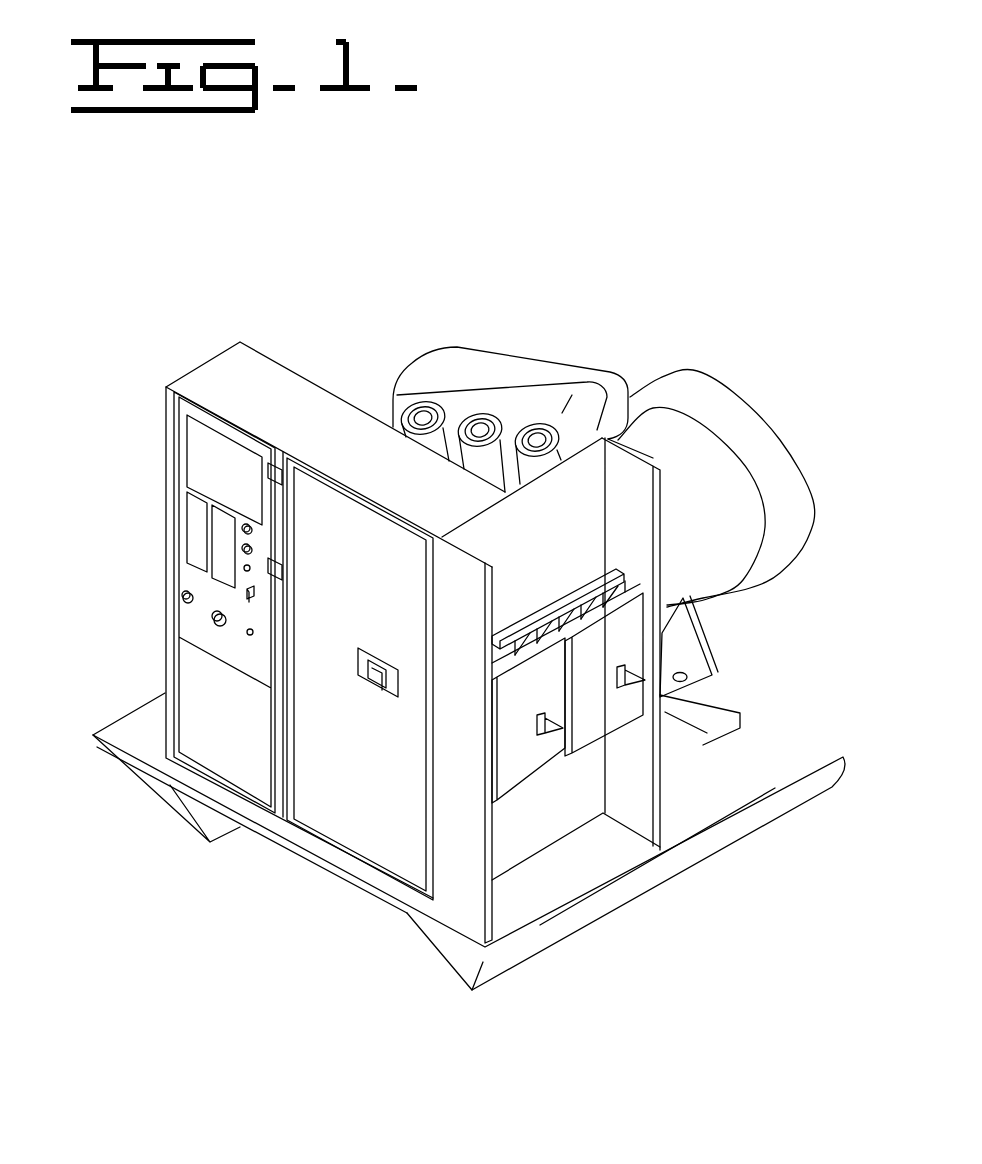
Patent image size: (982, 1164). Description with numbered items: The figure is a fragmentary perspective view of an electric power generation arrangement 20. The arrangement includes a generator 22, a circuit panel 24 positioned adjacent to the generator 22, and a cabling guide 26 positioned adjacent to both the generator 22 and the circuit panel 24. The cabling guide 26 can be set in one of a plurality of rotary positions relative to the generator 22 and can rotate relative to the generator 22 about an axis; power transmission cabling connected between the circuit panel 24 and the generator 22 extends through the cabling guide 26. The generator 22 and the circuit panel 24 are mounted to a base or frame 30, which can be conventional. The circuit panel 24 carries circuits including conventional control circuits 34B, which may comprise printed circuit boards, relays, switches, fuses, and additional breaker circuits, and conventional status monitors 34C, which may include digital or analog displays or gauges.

The electric power generation (EPG) arrangement 20 is at (612, 293).
The generator 22 is at (781, 451).
The circuit panel 24 is at (340, 783).
The cabling guide 26 is at (478, 348).
The base or frame 30 is at (795, 750).
The control circuits 34B is at (212, 527).
The status monitors 34C is at (223, 546).